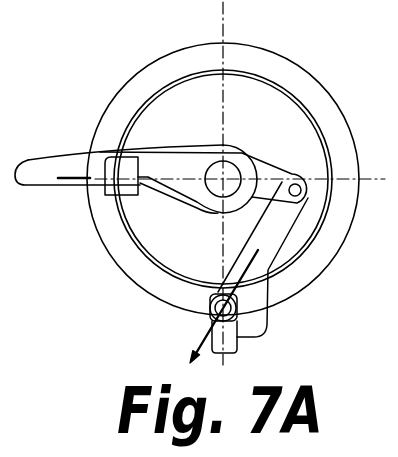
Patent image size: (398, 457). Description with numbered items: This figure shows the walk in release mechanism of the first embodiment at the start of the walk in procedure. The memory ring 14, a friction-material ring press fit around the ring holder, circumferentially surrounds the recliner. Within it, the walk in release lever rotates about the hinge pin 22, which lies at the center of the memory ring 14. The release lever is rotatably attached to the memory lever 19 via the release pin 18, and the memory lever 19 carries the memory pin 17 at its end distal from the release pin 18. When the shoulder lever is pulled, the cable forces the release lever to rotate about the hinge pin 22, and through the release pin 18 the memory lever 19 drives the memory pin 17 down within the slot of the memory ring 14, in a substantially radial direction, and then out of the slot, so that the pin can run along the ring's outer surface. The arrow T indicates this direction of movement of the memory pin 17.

The memory ring 14 is at (293, 80).
The memory pin 17 is at (208, 315).
The release pin 18 is at (301, 190).
The memory lever 19 is at (273, 238).
The hinge pin 22 is at (224, 178).
The direction of movement arrow T is at (261, 277).